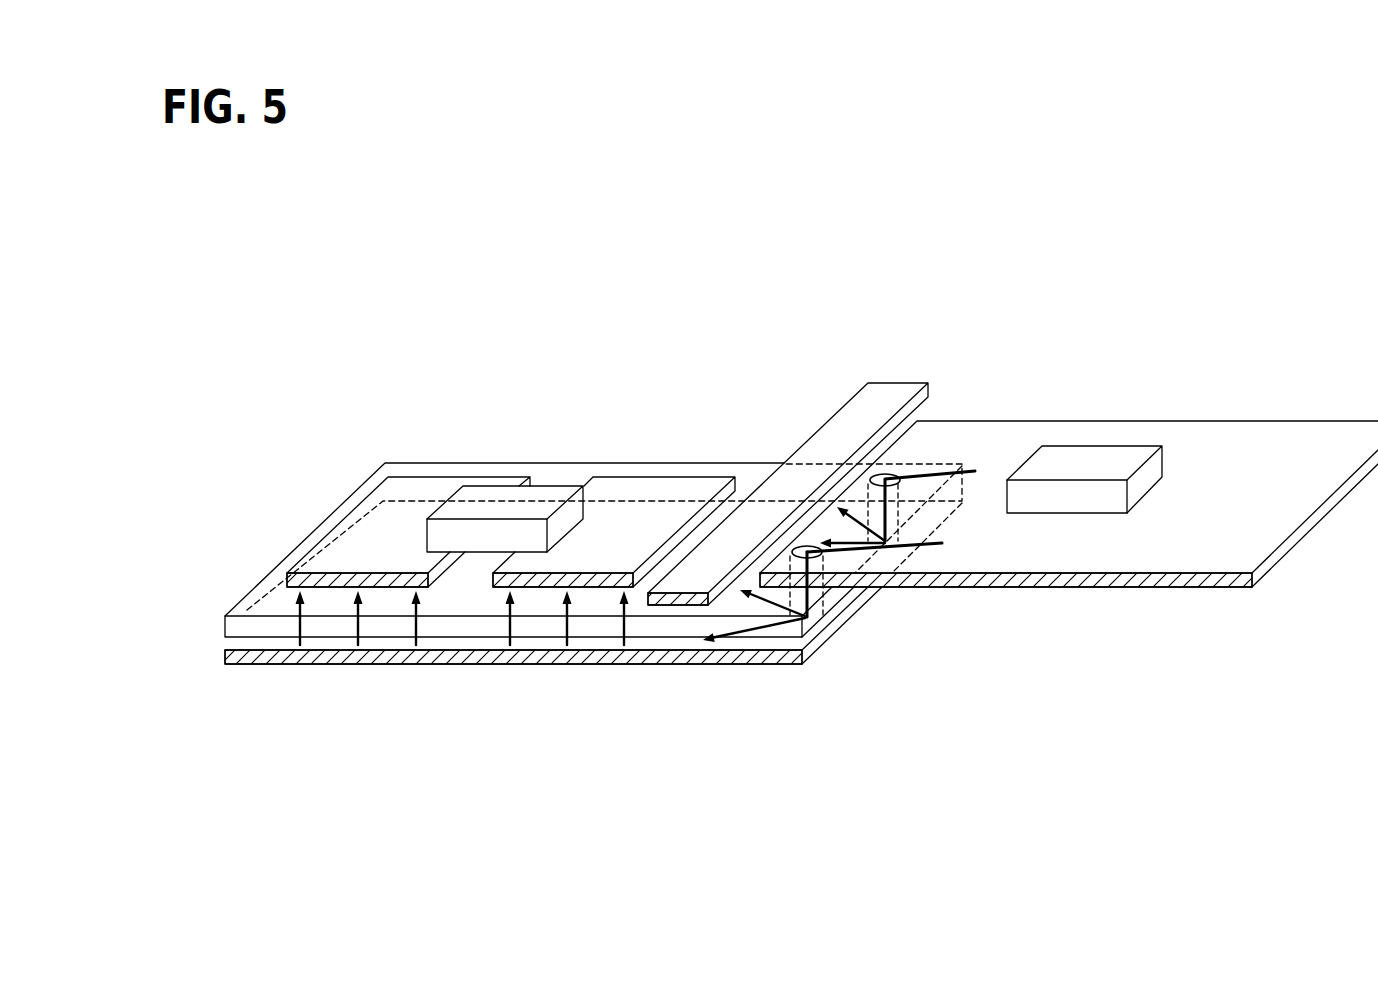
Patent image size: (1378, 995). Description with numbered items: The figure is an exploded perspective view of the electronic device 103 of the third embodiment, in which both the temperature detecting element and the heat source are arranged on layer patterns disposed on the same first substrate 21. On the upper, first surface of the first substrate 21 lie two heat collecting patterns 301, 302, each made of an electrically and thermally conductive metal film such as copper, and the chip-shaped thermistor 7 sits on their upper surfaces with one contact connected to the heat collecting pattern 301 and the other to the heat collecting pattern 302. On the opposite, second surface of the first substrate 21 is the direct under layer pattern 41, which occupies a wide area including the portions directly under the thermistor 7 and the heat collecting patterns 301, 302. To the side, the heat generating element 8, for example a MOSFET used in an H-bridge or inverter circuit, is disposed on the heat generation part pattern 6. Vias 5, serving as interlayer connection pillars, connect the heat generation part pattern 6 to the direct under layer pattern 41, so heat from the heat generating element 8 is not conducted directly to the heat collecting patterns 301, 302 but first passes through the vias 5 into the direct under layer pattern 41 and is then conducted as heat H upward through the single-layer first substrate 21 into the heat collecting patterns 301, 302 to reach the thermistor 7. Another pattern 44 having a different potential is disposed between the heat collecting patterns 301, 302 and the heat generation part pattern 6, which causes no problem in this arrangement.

The electronic device 103 is at (1055, 317).
The first substrate 21 is at (238, 624).
The direct under layer pattern 41 is at (238, 658).
The heat collecting pattern 301 is at (421, 488).
The heat collecting pattern 302 is at (675, 485).
The thermistor 7 is at (542, 492).
The another pattern 44 is at (895, 388).
The heat generation part pattern 6 is at (1280, 548).
The heat generating element 8 is at (1120, 457).
The vias 5 is at (813, 592).
The heat H is at (300, 630).